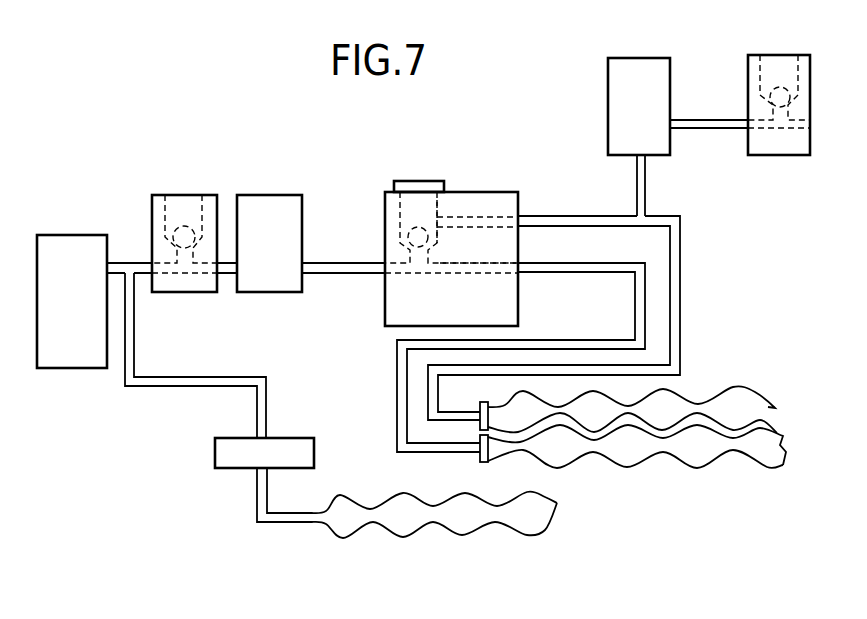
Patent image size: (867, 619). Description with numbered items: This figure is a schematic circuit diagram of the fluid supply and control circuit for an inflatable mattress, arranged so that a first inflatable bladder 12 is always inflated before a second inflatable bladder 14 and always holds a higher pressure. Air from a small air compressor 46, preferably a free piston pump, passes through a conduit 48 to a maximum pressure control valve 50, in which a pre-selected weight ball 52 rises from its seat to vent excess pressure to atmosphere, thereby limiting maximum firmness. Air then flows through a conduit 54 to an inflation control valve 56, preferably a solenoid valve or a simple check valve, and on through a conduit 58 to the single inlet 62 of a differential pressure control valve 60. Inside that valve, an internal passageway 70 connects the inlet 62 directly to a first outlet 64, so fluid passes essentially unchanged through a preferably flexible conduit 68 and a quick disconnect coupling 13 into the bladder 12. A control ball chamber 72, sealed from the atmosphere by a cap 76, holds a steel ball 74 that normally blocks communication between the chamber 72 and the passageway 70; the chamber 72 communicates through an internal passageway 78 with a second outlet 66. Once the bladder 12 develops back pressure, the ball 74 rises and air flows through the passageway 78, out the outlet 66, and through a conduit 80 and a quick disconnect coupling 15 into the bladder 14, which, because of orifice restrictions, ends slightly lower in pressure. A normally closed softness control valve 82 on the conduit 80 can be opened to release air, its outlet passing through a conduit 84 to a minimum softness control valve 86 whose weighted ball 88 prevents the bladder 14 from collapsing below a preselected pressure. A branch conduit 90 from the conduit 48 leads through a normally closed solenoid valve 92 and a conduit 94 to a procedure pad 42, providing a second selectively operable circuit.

The first inflatable bladder 12 is at (618, 462).
The quick disconnect coupling 13 is at (482, 462).
The second inflatable bladder 14 is at (710, 400).
The quick disconnect coupling 15 is at (480, 403).
The procedure pad 42 is at (405, 528).
The air compressor 46 is at (70, 368).
The conduit 48 is at (120, 267).
The maximum pressure control valve 50 is at (217, 205).
The ball 52 is at (178, 225).
The conduit 54 is at (228, 275).
The inflation control valve 56 is at (270, 195).
The conduit 58 is at (331, 267).
The differential pressure control valve 60 is at (397, 322).
The inlet 62 is at (385, 275).
The first outlet 64 is at (520, 270).
The second outlet 66 is at (519, 217).
The conduit 68 is at (397, 418).
The internal passageway 70 is at (481, 268).
The control ball chamber 72 is at (428, 210).
The steel ball 74 is at (413, 224).
The cap 76 is at (405, 181).
The internal passageway 78 is at (472, 217).
The conduit 80 is at (677, 287).
The softness control valve 82 is at (632, 57).
The conduit 84 is at (698, 120).
The minimum softness control valve 86 is at (767, 157).
The ball 88 is at (777, 82).
The branch conduit 90 is at (178, 380).
The solenoid valve 92 is at (220, 452).
The conduit 94 is at (260, 488).